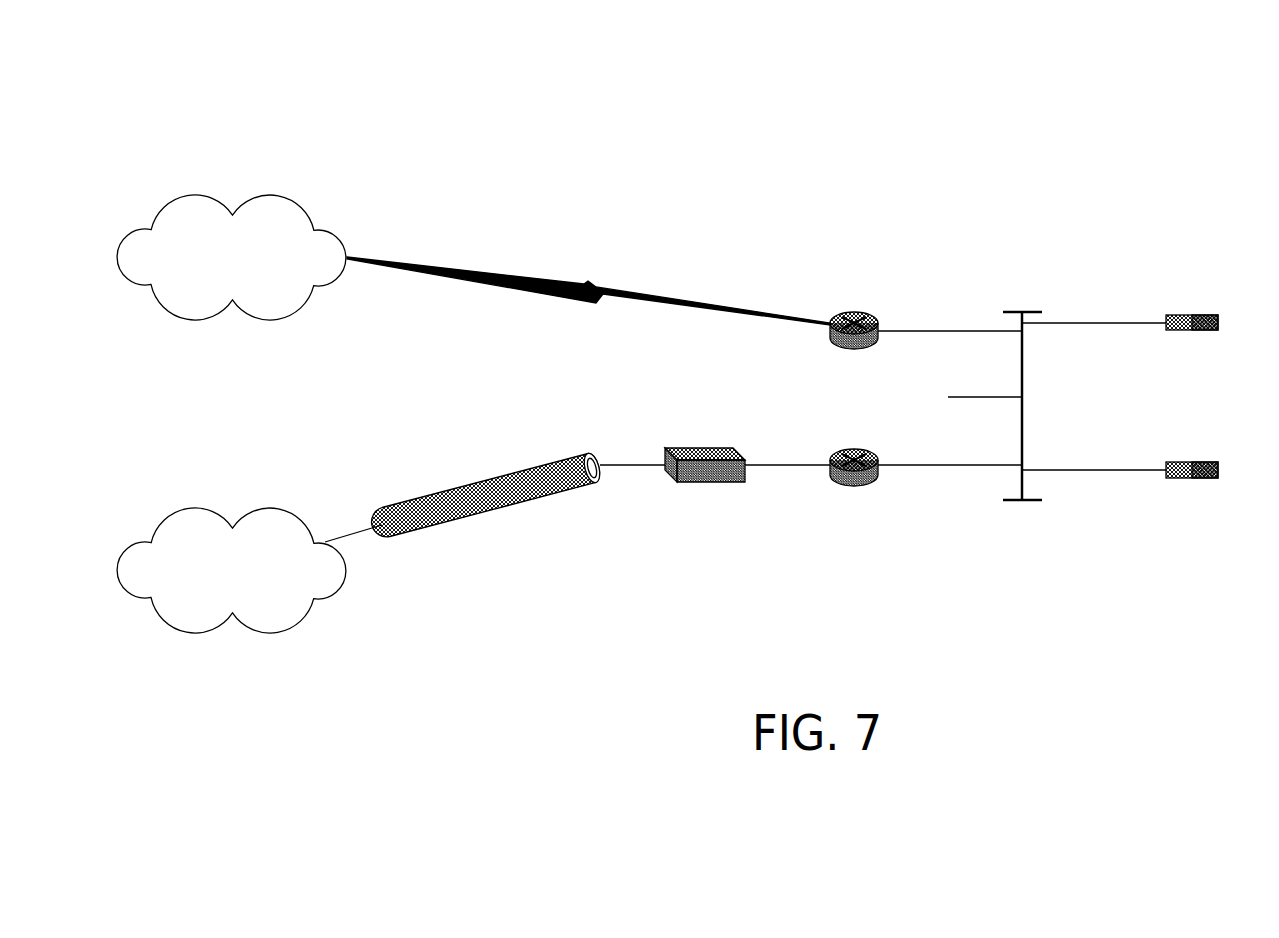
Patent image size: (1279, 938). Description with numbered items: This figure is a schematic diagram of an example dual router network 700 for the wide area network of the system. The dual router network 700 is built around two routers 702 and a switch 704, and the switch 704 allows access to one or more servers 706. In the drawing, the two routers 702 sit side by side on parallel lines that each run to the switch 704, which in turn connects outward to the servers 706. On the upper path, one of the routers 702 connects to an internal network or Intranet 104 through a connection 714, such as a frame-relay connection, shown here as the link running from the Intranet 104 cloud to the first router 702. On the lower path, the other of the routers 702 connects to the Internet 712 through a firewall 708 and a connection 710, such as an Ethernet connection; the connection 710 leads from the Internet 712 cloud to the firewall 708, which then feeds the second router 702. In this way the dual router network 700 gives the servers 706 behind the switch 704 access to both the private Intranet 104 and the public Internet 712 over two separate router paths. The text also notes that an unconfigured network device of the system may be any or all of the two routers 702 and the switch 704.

The dual router network 700 is at (1094, 92).
The Intranet 104 is at (190, 195).
The connection 714 is at (605, 283).
The router 702 is at (840, 308).
The switch 704 is at (1018, 310).
The server 706 is at (1200, 313).
The firewall 708 is at (700, 448).
The connection 710 is at (495, 478).
The Internet 712 is at (190, 510).